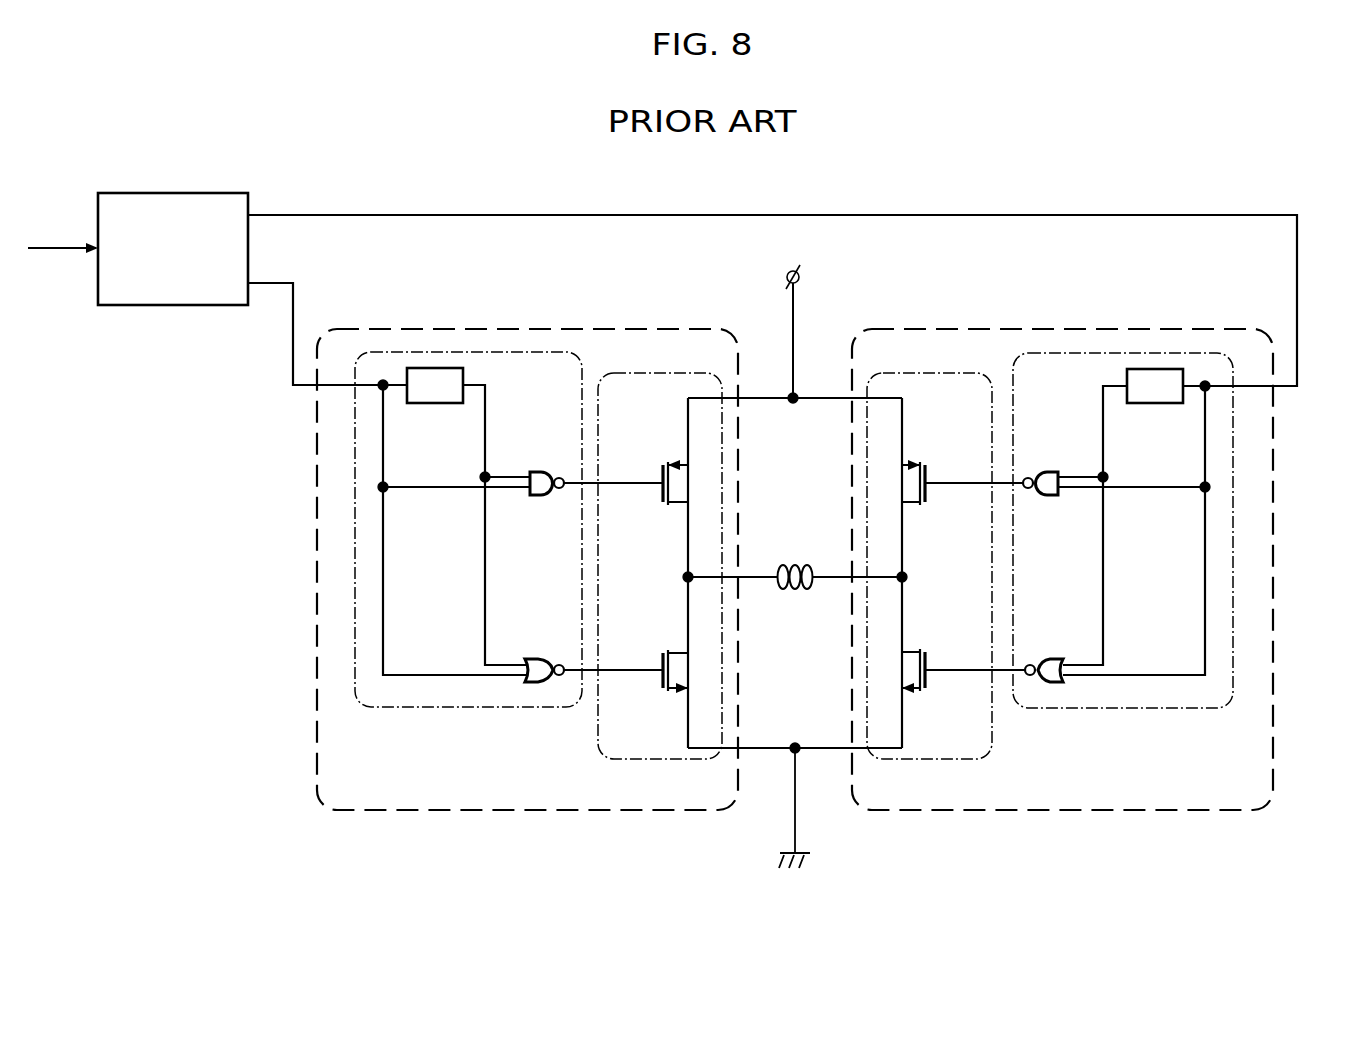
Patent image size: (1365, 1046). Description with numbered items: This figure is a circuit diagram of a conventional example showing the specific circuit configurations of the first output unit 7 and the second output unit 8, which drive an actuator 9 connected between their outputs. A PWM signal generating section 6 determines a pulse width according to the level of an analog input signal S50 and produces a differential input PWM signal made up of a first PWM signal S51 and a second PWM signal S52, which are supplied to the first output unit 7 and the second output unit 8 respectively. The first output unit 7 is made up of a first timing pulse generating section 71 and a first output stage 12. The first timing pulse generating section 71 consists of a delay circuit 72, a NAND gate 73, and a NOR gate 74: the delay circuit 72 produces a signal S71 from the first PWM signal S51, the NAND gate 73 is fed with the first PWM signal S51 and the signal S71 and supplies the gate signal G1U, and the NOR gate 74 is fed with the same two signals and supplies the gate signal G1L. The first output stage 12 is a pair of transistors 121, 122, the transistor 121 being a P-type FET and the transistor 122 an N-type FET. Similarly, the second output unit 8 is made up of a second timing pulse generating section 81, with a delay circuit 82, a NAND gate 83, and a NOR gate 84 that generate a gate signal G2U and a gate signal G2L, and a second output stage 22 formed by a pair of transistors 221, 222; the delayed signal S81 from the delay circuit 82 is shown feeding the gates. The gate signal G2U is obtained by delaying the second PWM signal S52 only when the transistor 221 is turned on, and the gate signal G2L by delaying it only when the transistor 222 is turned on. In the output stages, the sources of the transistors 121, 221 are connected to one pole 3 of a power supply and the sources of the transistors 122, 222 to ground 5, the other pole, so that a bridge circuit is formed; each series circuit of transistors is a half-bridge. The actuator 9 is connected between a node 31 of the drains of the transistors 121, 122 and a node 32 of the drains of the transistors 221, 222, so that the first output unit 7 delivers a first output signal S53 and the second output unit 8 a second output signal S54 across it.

The PWM signal generating section 6 is at (186, 198).
The first output unit 7 is at (315, 773).
The first timing pulse generating section 71 is at (461, 708).
The delay circuit 72 is at (436, 403).
The NAND gate 73 is at (541, 495).
The NOR gate 74 is at (540, 659).
The first output stage 12 is at (634, 374).
The transistor 121 is at (668, 504).
The transistor 122 is at (666, 653).
The pole of a power supply 3 is at (799, 275).
The ground 5 is at (797, 845).
The node 31 is at (690, 581).
The node 32 is at (900, 576).
The actuator 9 is at (797, 565).
The second output stage 22 is at (910, 374).
The transistor 221 is at (921, 504).
The transistor 222 is at (922, 652).
The second output unit 8 is at (1276, 760).
The second timing pulse generating section 81 is at (1090, 708).
The delay circuit 82 is at (1150, 403).
The NAND gate 83 is at (1046, 495).
The NOR gate 84 is at (1048, 659).
The analog input signal S50 is at (63, 239).
The first pulse-width modulation signal S51 is at (327, 322).
The second pulse-width modulation signal S52 is at (772, 288).
The first output signal S53 is at (757, 577).
The second output signal S54 is at (838, 578).
The signal S71 is at (485, 433).
The delayed signal S81 is at (1103, 433).
The gate signal G1U is at (637, 483).
The gate signal G1L is at (645, 670).
The gate signal G2U is at (967, 483).
The gate signal G2L is at (950, 670).